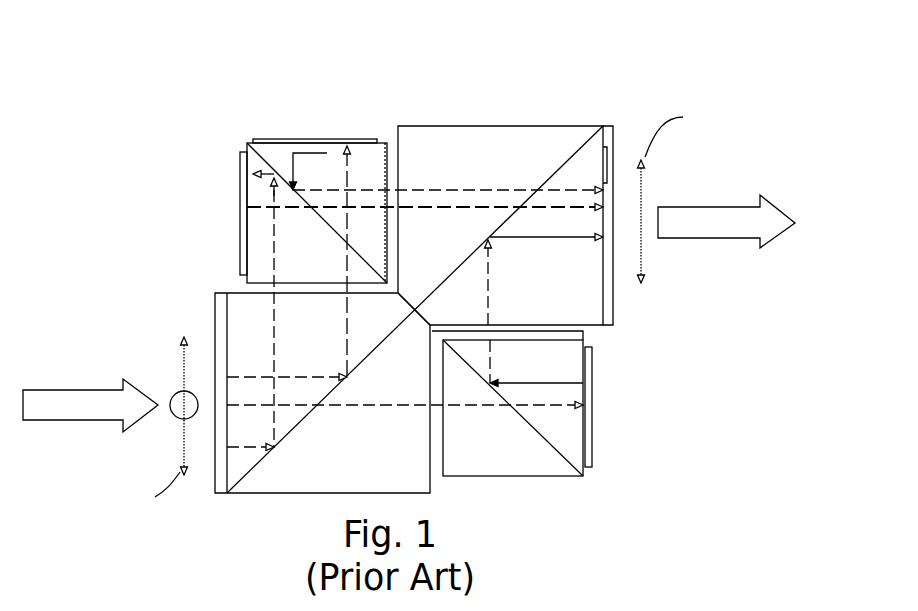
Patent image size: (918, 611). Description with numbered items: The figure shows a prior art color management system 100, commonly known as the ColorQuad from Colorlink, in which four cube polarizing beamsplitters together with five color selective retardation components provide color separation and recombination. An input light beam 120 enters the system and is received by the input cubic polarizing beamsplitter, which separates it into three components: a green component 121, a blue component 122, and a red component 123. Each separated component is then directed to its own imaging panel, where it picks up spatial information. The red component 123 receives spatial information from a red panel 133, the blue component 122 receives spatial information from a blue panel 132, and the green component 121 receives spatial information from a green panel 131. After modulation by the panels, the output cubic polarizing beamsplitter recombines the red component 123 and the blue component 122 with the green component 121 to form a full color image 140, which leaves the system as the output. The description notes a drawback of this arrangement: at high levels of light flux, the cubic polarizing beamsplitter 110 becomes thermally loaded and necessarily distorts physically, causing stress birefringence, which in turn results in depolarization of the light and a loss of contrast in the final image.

The color management system 100 is at (146, 57).
The cubic polarizing beamsplitter 110 is at (515, 150).
The input light beam 120 is at (55, 388).
The green component 121 is at (508, 238).
The blue component 122 is at (278, 226).
The red component 123 is at (576, 182).
The green panel 131 is at (713, 402).
The blue panel 132 is at (125, 214).
The red panel 133 is at (318, 108).
The full color image 140 is at (688, 207).